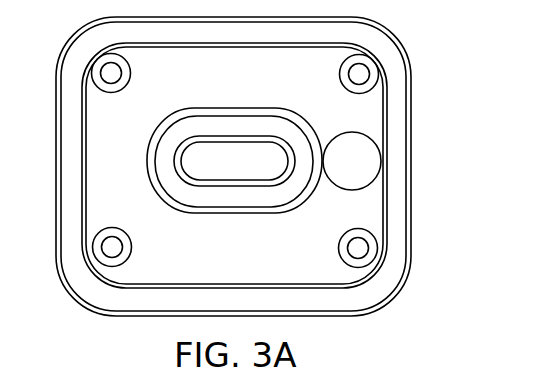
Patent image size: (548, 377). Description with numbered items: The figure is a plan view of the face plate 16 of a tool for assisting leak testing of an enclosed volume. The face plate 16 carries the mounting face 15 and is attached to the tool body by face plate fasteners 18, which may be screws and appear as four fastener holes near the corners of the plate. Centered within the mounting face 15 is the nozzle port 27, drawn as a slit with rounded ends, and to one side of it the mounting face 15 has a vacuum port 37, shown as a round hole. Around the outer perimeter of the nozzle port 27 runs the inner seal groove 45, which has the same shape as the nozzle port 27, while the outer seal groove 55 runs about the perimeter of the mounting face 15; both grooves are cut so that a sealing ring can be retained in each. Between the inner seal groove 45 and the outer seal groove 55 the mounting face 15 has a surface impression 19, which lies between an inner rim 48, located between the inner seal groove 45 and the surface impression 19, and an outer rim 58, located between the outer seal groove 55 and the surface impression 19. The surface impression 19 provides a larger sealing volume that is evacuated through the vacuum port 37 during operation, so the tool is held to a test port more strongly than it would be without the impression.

The mounting face 15 is at (128, 174).
The face plate 16 is at (450, 93).
The face plate fasteners 18 is at (108, 72).
The surface impression 19 is at (160, 260).
The nozzle port 27 is at (223, 150).
The vacuum port 37 is at (370, 160).
The inner seal groove 45 is at (235, 197).
The inner rim 48 is at (265, 113).
The outer seal groove 55 is at (71, 150).
The outer rim 58 is at (87, 126).